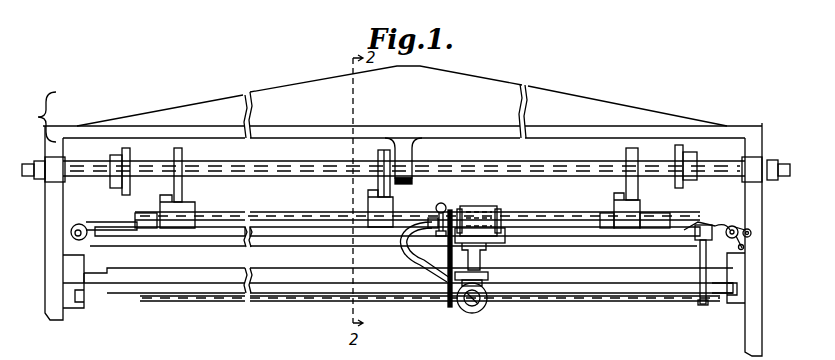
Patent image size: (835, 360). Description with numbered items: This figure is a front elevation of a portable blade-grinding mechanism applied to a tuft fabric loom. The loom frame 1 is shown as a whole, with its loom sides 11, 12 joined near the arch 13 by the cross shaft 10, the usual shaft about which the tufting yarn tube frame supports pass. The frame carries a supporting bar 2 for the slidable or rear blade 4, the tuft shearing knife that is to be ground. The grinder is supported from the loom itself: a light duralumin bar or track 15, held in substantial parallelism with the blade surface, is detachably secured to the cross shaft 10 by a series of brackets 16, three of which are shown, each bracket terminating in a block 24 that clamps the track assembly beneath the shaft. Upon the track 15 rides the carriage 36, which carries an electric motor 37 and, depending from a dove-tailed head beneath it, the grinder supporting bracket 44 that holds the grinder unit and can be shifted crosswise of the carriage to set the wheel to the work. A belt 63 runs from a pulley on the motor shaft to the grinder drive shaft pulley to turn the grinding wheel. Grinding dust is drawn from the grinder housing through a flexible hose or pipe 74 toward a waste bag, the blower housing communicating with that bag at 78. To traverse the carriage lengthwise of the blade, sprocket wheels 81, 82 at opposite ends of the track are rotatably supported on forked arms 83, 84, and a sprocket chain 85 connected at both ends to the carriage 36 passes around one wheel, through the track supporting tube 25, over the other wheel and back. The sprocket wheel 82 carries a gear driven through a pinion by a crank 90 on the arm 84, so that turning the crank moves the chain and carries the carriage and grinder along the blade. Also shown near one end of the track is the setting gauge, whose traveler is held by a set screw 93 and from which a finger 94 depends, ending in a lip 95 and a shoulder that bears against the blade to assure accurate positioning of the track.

The loom frame 1 is at (41, 117).
The supporting bar 2 is at (695, 284).
The slidable or rear blade 4 is at (546, 290).
The cross shaft 10 is at (472, 173).
The loom side 11 is at (50, 236).
The loom side 12 is at (748, 330).
The arch 13 is at (581, 108).
The bar or track 15 is at (320, 233).
The brackets 16 is at (182, 160).
The block 24 is at (181, 218).
The track supporting tube 25 is at (297, 216).
The carriage 36 is at (504, 242).
The electric motor 37 is at (494, 212).
The grinder supporting bracket 44 is at (475, 257).
The belt 63 is at (448, 255).
The flexible hose or pipe 74 is at (412, 250).
The blower housing communication 78 is at (444, 209).
The sprocket wheel 81 is at (79, 224).
The sprocket wheel 82 is at (734, 225).
The forked arm 83 is at (96, 226).
The forked arm 84 is at (726, 224).
The sprocket chain 85 is at (165, 246).
The crank 90 is at (746, 244).
The set screw 93 is at (697, 225).
The finger 94 is at (700, 272).
The lip 95 is at (703, 302).